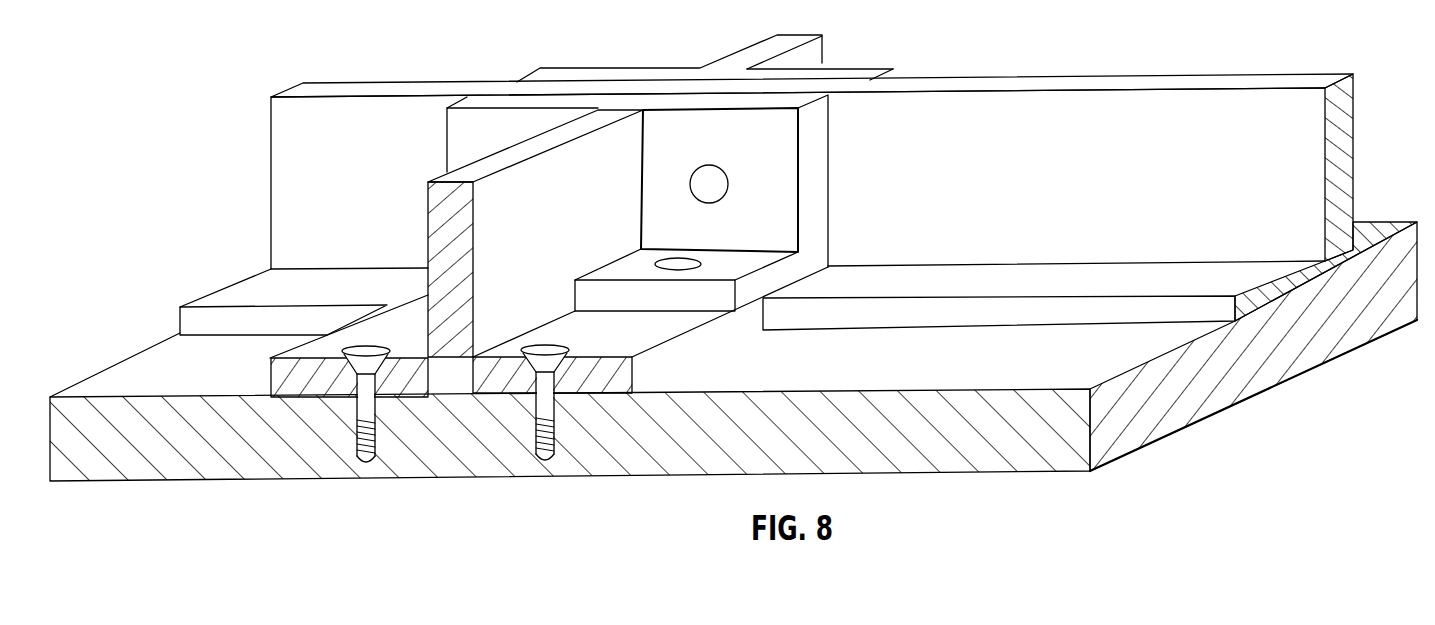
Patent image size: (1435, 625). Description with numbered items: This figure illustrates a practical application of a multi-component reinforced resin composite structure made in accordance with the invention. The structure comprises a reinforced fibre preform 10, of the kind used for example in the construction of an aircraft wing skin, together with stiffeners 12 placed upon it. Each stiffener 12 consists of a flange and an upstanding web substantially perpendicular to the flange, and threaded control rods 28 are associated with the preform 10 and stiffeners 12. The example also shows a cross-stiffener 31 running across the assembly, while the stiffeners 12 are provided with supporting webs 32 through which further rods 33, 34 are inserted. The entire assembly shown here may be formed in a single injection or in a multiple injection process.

The reinforced fibre preform 10 is at (1051, 432).
The stiffener 12 is at (441, 382).
The threaded control rod 28 is at (355, 432).
The cross-stiffener 31 is at (1205, 82).
The supporting web 32 is at (677, 103).
The rod 33 is at (715, 182).
The rod 34 is at (690, 263).